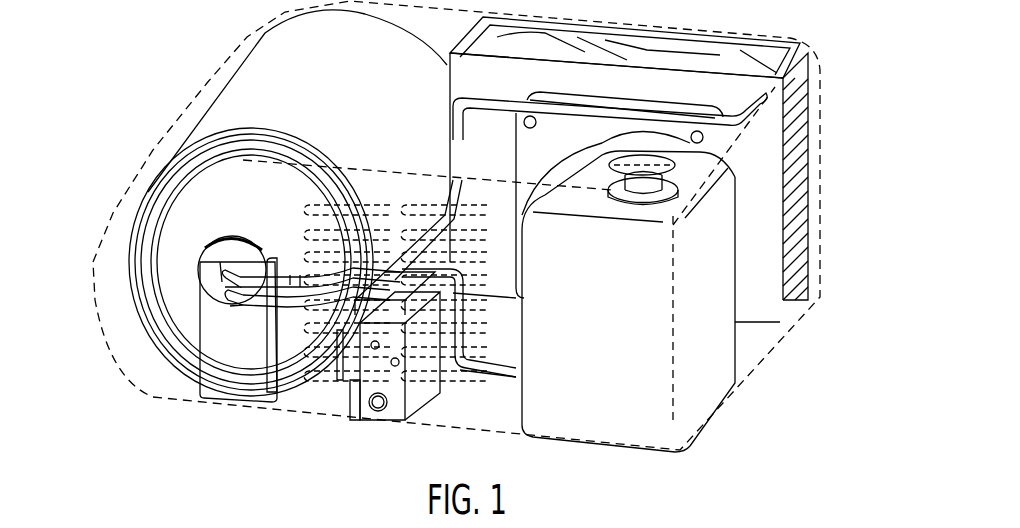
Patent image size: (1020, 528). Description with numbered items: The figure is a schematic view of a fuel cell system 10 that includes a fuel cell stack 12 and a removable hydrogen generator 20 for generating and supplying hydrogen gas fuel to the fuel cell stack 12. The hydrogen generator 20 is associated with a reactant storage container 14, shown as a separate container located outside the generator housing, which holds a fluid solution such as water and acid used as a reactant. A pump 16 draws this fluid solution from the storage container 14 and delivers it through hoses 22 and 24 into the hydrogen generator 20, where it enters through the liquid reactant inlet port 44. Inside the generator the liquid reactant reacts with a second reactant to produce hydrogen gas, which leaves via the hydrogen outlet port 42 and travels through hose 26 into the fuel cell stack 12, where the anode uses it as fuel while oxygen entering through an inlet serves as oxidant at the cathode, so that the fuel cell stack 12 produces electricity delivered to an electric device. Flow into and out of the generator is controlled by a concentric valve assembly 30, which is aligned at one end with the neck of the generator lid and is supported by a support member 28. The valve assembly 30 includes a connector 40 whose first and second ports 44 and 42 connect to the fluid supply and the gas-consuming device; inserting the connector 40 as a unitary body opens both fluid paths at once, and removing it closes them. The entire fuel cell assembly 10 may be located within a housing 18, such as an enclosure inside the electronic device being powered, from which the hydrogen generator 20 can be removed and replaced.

The fuel cell system 10 is at (836, 26).
The fuel cell stack 12 is at (763, 291).
The reactant storage container 14 is at (700, 387).
The pump 16 is at (370, 410).
The housing 18 is at (247, 38).
The hydrogen generator 20 is at (215, 92).
The hose 22 is at (515, 375).
The hose 24 is at (250, 302).
The hose 26 is at (277, 290).
The support member 28 is at (205, 372).
The concentric valve assembly 30 is at (200, 240).
The connector 40 is at (233, 270).
The hydrogen outlet port 42 is at (233, 289).
The liquid reactant inlet port 44 is at (230, 304).